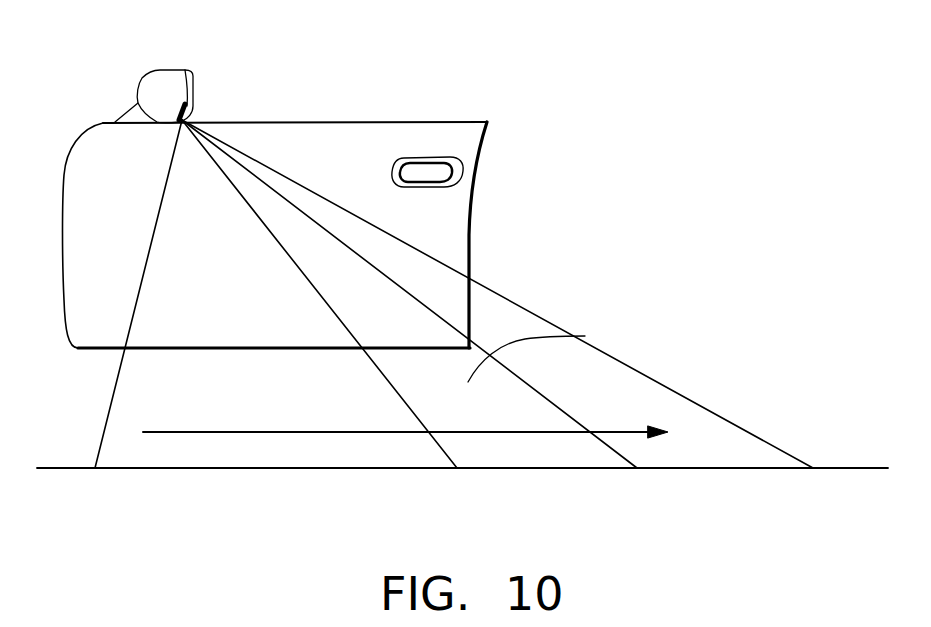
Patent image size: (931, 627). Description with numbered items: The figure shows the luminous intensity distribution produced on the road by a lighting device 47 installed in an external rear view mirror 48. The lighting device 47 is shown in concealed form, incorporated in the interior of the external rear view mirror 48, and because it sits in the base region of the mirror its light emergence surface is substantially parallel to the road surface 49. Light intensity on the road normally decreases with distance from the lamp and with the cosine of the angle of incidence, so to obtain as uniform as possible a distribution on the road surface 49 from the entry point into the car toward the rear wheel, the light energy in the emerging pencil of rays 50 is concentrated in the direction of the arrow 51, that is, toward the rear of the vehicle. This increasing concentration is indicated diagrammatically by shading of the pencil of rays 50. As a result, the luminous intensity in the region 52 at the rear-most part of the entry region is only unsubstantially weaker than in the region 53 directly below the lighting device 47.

The lighting device 47 is at (193, 117).
The external rear view mirror 48 is at (157, 84).
The road surface 49 is at (827, 468).
The pencil of rays 50 is at (585, 336).
The arrow 51 is at (521, 433).
The region 52 is at (705, 462).
The region 53 is at (124, 463).